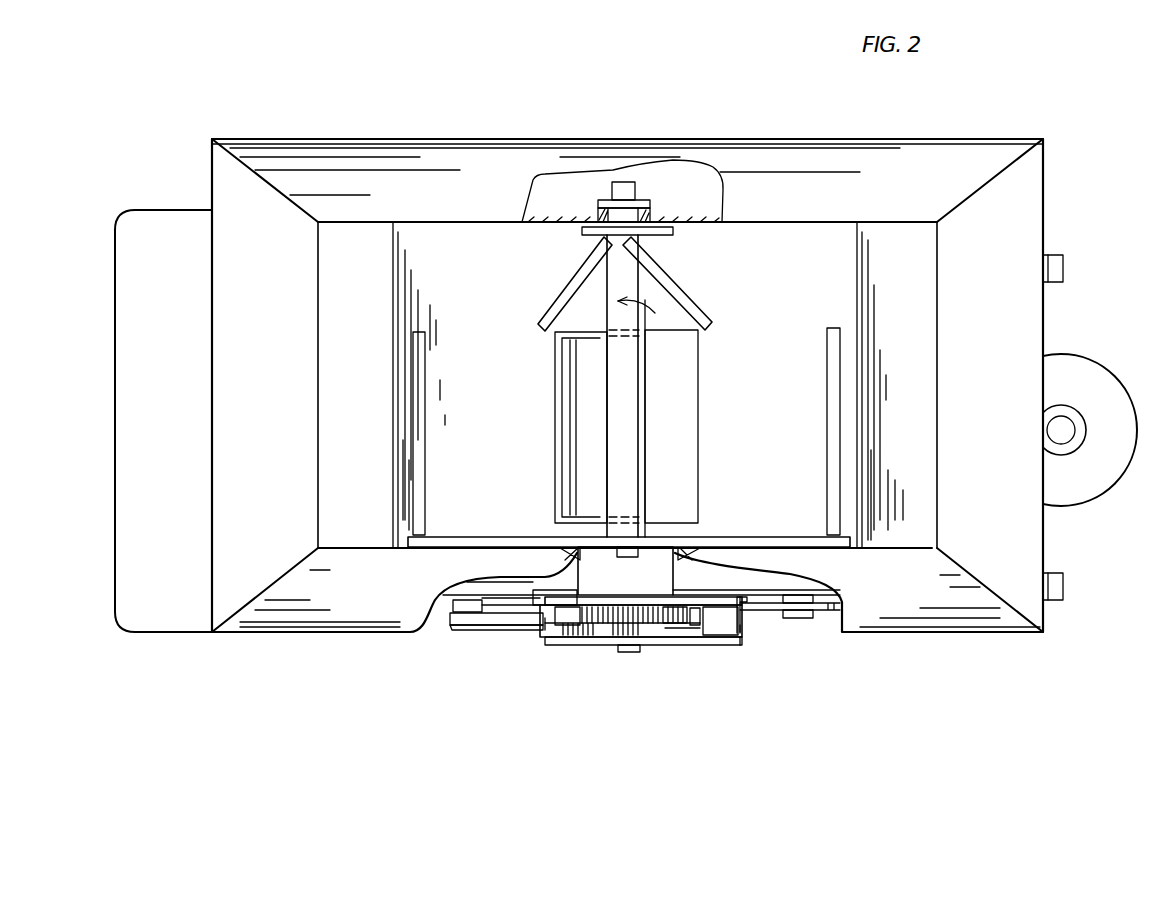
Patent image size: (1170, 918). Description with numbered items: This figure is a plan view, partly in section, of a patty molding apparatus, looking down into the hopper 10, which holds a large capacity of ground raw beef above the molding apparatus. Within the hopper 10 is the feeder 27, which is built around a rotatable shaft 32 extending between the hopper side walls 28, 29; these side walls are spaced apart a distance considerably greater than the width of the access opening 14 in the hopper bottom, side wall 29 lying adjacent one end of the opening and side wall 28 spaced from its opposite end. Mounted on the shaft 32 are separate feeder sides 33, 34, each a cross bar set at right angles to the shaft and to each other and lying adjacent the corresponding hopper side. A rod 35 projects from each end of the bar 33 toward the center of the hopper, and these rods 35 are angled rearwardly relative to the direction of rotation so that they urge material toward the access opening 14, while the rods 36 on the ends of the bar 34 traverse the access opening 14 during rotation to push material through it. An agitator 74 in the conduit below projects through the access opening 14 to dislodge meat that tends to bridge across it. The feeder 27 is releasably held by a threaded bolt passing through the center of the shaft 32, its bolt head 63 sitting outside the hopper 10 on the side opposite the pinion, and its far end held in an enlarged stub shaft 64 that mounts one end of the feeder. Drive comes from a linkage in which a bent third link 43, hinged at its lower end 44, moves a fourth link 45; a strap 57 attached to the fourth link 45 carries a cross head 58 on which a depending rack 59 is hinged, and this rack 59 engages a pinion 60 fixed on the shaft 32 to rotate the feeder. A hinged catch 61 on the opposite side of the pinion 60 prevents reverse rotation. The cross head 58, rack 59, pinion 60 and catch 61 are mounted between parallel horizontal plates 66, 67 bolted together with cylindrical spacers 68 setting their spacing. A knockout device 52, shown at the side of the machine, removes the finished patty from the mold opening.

The hopper 10 is at (757, 145).
The access opening 14 is at (695, 444).
The feeder 27 is at (640, 495).
The side wall 28 is at (695, 212).
The side wall 29 is at (447, 553).
The rotatable shaft 32 is at (638, 413).
The feeder side 33 is at (672, 236).
The feeder side 34 is at (768, 537).
The rod 35 is at (585, 275).
The rod 36 is at (428, 458).
The third link 43 is at (743, 599).
The lower end 44 is at (843, 608).
The fourth link 45 is at (505, 627).
The knockout device 52 is at (1090, 357).
The strap 57 is at (463, 618).
The cross head 58 is at (613, 630).
The depending rack 59 is at (688, 620).
The pinion 60 is at (652, 618).
The hinged catch 61 is at (568, 620).
The bolt head 63 is at (627, 183).
The stub shaft 64 is at (643, 585).
The horizontal plate 66 is at (745, 603).
The horizontal plate 67 is at (728, 648).
The cylindrical spacer 68 is at (547, 622).
The agitator 74 is at (578, 427).